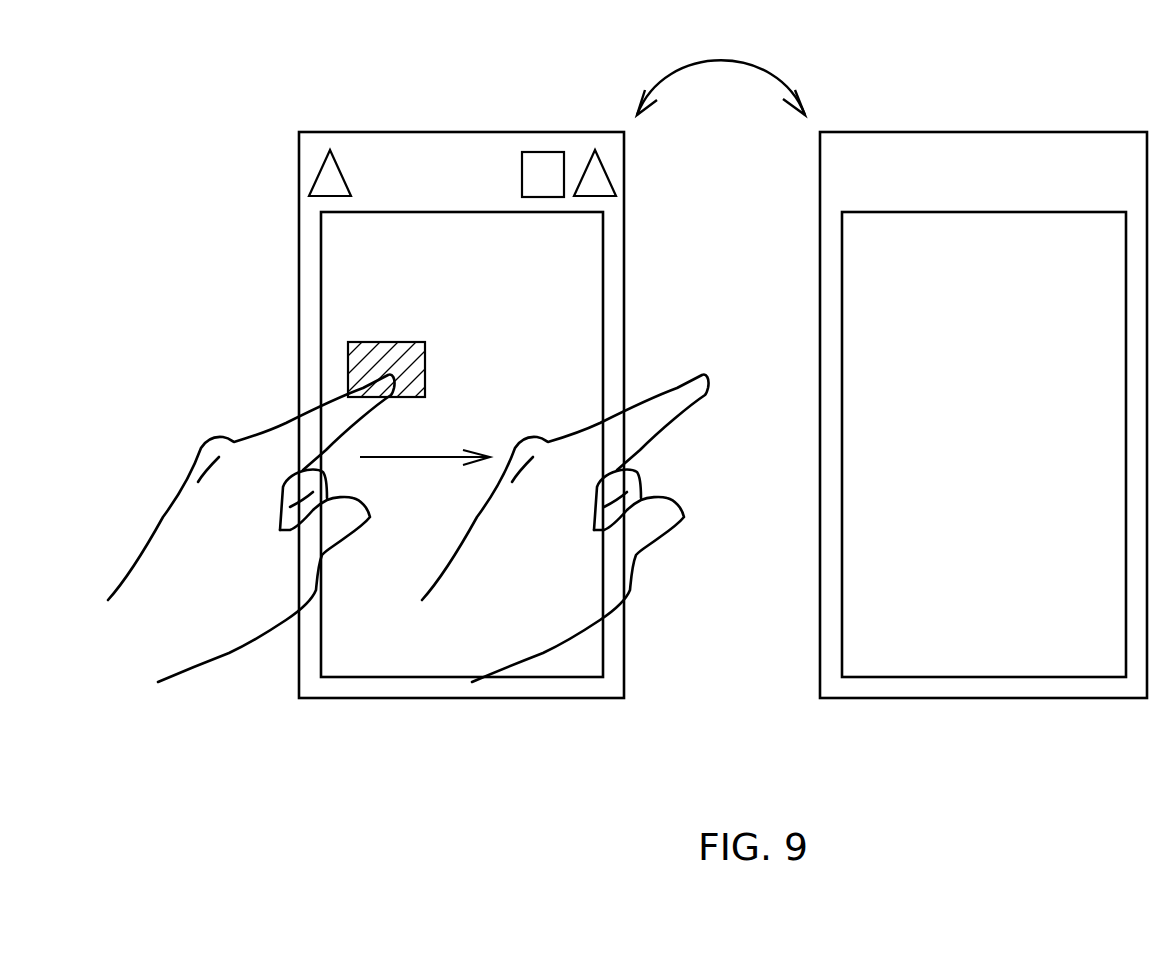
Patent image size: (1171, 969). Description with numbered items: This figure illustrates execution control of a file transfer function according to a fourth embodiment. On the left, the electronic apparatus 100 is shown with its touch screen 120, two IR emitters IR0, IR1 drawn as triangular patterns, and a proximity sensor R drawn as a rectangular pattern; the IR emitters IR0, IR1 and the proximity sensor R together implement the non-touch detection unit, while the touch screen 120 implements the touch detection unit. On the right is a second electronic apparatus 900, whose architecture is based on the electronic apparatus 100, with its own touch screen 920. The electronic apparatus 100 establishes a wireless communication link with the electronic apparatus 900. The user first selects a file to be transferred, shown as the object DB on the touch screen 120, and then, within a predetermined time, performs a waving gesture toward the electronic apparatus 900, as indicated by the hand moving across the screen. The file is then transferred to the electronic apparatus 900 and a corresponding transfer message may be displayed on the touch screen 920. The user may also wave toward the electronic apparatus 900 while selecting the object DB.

The electronic apparatus 100 is at (462, 132).
The touch screen 120 is at (456, 677).
The infrared emitter IR1 is at (318, 175).
The infrared emitter IR0 is at (612, 165).
The proximity sensor R is at (528, 174).
The object DB is at (386, 356).
The electronic apparatus 900 is at (983, 132).
The touch screen 920 is at (997, 677).